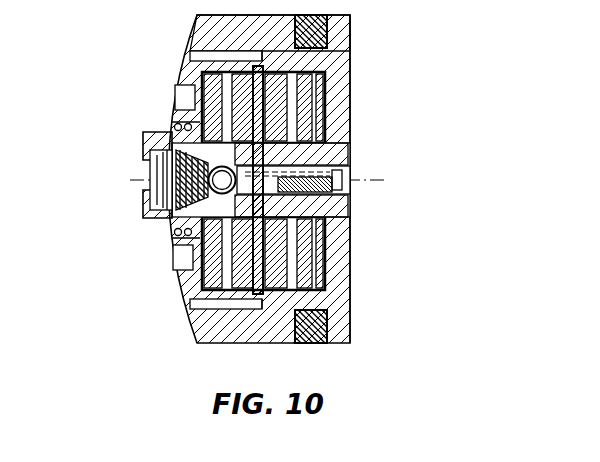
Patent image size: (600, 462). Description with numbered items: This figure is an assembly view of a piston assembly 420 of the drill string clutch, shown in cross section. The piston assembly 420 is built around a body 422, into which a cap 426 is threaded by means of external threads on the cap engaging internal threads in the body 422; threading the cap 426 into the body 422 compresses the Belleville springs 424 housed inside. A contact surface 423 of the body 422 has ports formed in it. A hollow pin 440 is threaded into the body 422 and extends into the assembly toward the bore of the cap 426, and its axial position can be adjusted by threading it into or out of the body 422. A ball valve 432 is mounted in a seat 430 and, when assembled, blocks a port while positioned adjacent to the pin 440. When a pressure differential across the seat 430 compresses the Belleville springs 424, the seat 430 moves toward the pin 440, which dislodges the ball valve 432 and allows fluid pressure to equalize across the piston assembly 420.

The piston assembly 420 is at (415, 45).
The body 422 is at (205, 28).
The contact surface 423 is at (355, 275).
The Belleville springs 424 is at (197, 279).
The cap 426 is at (190, 228).
The seat 430 is at (143, 160).
The ball valve 432 is at (318, 345).
The hollow pin 440 is at (350, 148).